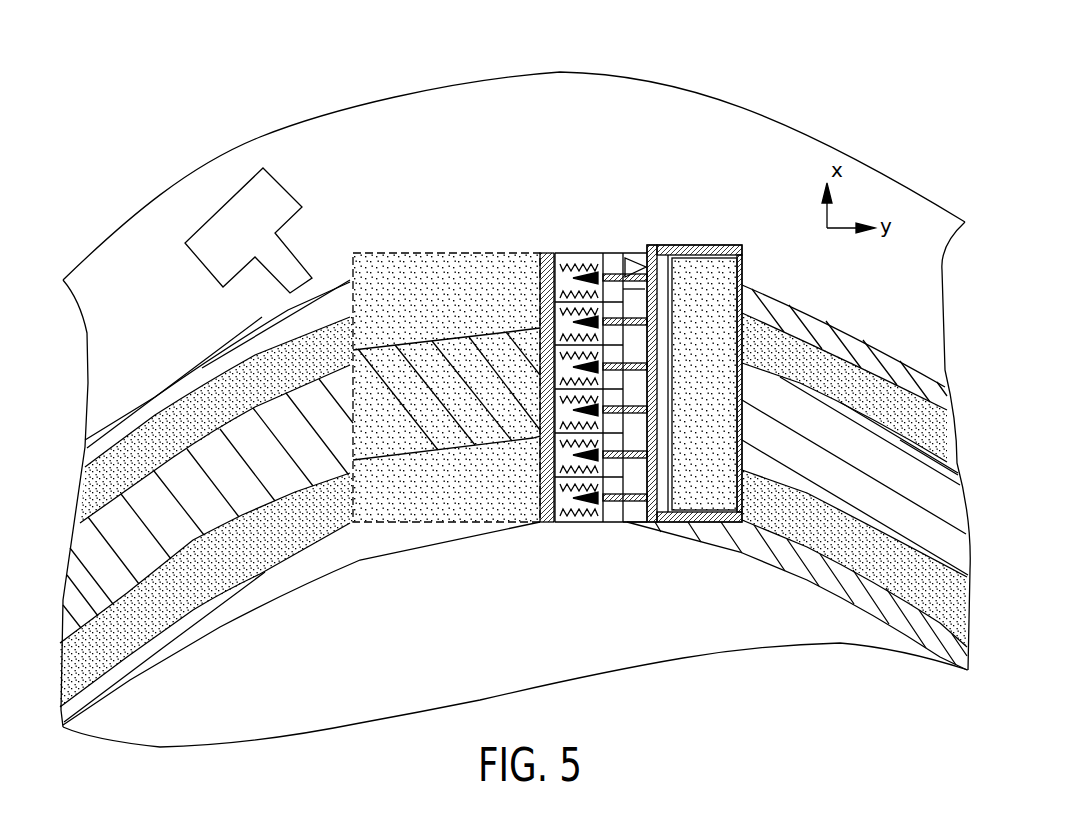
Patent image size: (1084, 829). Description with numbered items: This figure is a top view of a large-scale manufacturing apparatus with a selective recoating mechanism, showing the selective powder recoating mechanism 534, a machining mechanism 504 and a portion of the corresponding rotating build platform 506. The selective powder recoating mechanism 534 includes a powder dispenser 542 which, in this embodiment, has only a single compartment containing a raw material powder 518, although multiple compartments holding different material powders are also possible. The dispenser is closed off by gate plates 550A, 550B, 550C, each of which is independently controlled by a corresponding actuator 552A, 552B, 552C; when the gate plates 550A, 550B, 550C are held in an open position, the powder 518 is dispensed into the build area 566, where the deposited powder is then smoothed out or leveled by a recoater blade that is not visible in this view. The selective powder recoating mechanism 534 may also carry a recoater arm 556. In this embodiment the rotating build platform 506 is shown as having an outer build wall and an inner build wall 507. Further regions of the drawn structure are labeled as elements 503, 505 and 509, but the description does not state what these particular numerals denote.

The rotating build platform 506 is at (610, 88).
The machining mechanism 504 is at (273, 197).
The outer layer 509 is at (817, 321).
The adhesive layers 505 is at (208, 393).
The intermediate layer 503 is at (202, 508).
The inner build wall 507 is at (811, 570).
The build area 566 is at (395, 527).
The recoater arm 556 is at (547, 525).
The selective powder recoating mechanism 534 is at (743, 593).
The actuator 552A is at (572, 322).
The actuator 552B is at (572, 410).
The actuator 552C is at (566, 495).
The gate plate 550A is at (645, 262).
The gate plate 550B is at (620, 296).
The gate plate 550C is at (645, 512).
The powder dispenser 542 is at (745, 262).
The raw material powder 518 is at (722, 358).